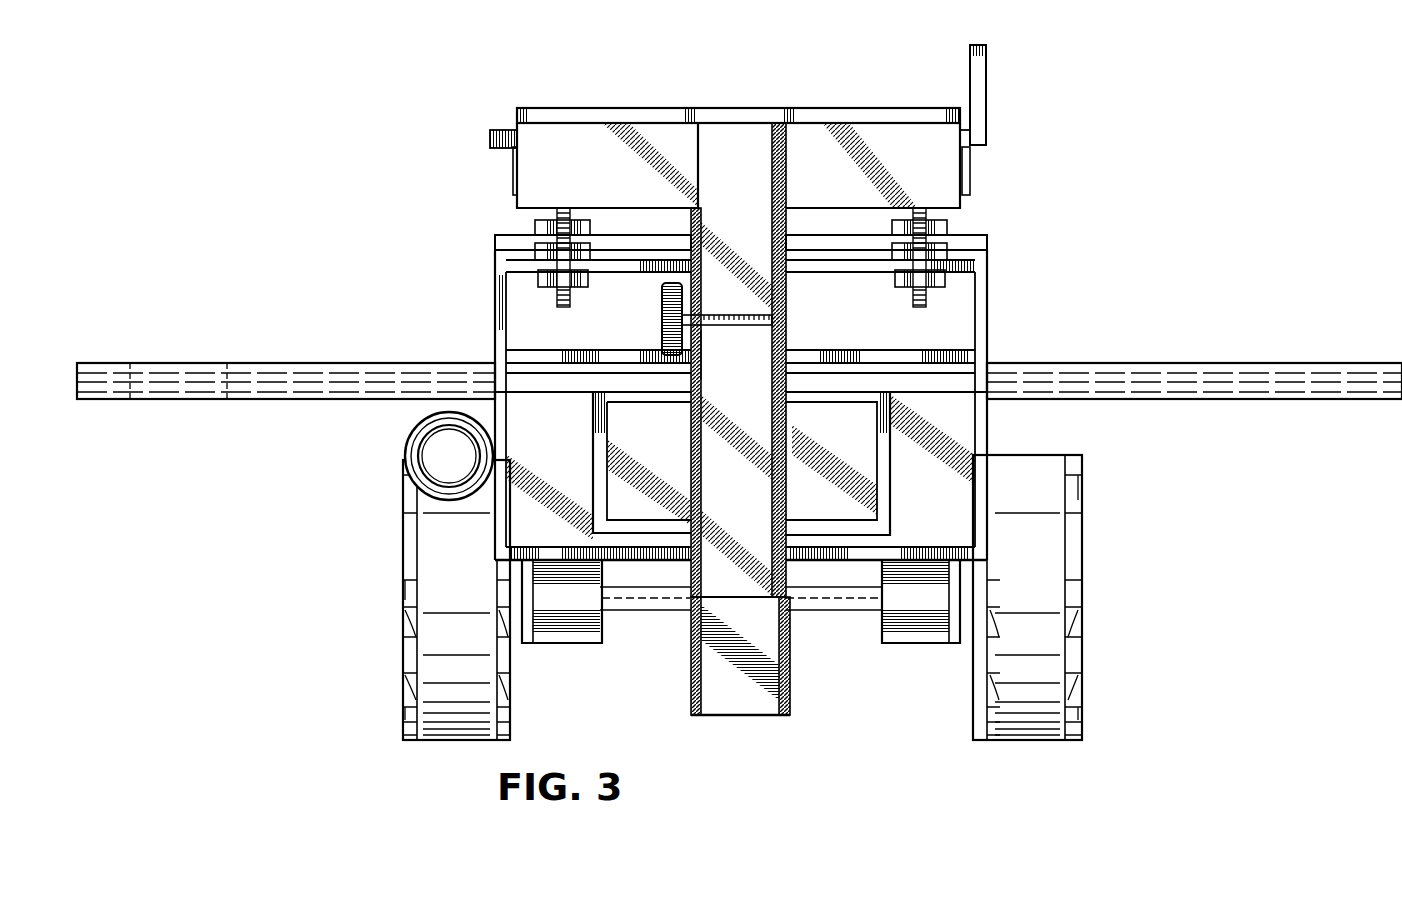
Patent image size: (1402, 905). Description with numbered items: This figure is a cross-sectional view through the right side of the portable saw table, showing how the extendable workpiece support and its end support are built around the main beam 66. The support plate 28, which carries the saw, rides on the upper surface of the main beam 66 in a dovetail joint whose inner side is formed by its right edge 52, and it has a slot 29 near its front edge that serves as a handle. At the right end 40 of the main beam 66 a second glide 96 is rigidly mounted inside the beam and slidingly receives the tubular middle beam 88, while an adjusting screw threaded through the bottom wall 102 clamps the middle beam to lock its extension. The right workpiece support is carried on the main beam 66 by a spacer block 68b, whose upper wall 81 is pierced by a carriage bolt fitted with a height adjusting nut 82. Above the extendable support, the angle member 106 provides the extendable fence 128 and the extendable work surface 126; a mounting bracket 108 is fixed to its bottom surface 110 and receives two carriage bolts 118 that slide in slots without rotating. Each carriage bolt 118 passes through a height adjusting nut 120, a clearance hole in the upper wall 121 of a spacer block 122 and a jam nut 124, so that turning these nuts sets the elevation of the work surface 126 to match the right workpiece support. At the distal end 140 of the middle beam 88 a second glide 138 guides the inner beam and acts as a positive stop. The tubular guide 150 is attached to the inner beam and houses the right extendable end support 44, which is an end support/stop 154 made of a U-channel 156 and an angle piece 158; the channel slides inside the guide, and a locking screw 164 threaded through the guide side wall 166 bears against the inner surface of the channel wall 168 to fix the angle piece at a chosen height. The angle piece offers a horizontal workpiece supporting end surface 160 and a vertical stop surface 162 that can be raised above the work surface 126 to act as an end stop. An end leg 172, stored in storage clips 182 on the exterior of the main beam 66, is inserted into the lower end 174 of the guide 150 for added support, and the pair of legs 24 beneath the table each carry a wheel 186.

The legs 24 is at (560, 644).
The support plate 28 is at (250, 362).
The slot 29 is at (124, 372).
The right end 40 is at (560, 362).
The right extendable end support 44 is at (799, 318).
The right edge 52 is at (188, 385).
The main beam 66 is at (989, 440).
The spacer block 68b is at (883, 349).
The upper wall 81 is at (498, 236).
The height adjusting nut 82 is at (536, 228).
The middle beam 88 is at (893, 522).
The second glide 96 is at (940, 477).
The bottom wall 102 is at (828, 550).
The angle member 106 is at (988, 86).
The mounting bracket 108 is at (512, 167).
The bottom surface 110 is at (978, 152).
The carriage bolts 118 is at (571, 215).
The height adjusting nut 120 is at (585, 255).
The upper wall 121 is at (508, 270).
The spacer block 122 is at (988, 330).
The jam nut 124 is at (540, 280).
The extendable work surface 126 is at (508, 130).
The extendable fence 128 is at (969, 85).
The second glide 138 is at (658, 455).
The distal end 140 is at (593, 445).
The guide 150 is at (691, 656).
The end support/stop 154 is at (689, 226).
The U-channel 156 is at (786, 214).
The angle piece 158 is at (667, 107).
The workpiece supporting end surface 160 is at (752, 108).
The stop surface 162 is at (815, 168).
The locking screw 164 is at (661, 318).
The guide side wall 166 is at (701, 352).
The channel wall 168 is at (770, 156).
The end leg 172 is at (404, 456).
The lower end 174 is at (740, 716).
The storage clips 182 is at (494, 400).
The wheel 186 is at (470, 581).